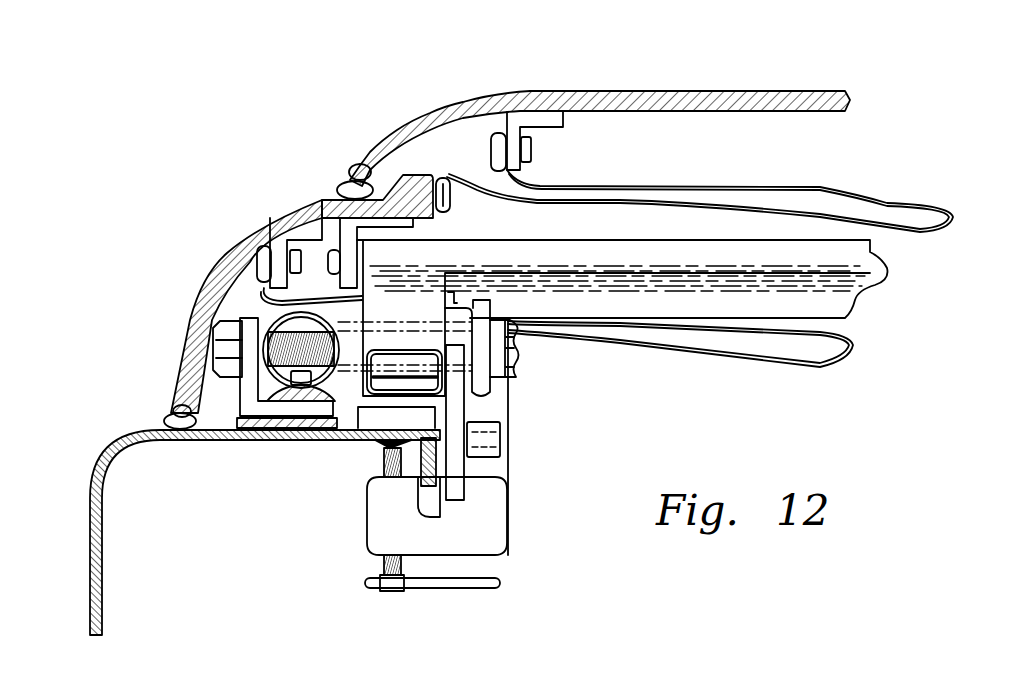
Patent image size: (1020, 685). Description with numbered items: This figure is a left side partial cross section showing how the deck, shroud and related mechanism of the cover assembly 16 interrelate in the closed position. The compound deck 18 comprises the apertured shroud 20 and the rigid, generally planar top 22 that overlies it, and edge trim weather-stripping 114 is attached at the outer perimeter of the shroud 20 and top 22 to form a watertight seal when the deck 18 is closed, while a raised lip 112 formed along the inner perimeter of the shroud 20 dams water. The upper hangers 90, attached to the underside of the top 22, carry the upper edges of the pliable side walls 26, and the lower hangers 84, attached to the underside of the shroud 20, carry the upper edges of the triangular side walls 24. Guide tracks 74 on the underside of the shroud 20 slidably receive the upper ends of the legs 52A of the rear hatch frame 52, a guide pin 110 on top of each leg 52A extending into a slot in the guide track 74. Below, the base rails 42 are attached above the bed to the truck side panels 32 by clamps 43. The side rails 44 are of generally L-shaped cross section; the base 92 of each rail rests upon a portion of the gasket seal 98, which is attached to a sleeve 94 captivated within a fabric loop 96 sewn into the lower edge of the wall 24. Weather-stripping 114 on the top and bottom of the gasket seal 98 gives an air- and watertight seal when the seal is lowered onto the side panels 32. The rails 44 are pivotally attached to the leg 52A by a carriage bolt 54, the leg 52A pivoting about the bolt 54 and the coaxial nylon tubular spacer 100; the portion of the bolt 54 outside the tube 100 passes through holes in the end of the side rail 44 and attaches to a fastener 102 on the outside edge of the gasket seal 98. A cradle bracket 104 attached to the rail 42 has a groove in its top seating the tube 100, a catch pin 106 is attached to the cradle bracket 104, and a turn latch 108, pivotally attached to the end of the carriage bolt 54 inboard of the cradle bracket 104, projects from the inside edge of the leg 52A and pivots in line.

The cover assembly 16 is at (352, 86).
The compound deck 18 is at (345, 140).
The shroud 20 is at (180, 365).
The top 22 is at (672, 90).
The side walls 24 is at (748, 358).
The side walls 26 is at (690, 175).
The side panels 32 is at (130, 440).
The base rails 42 is at (445, 497).
The clamps 43 is at (508, 545).
The side rails 44 is at (250, 300).
The rear hatch frame 52 is at (682, 250).
The legs 52A is at (413, 280).
The carriage bolt 54 is at (515, 357).
The guide tracks 74 is at (410, 224).
The lower hangers 84 is at (280, 243).
The upper hangers 90 is at (530, 120).
The base 92 is at (250, 400).
The sleeve 94 is at (238, 430).
The fabric loop 96 is at (336, 400).
The gasket seal 98 is at (300, 392).
The tubular spacer 100 is at (352, 350).
The fastener 102 is at (222, 325).
The cradle bracket 104 is at (475, 490).
The catch pin 106 is at (490, 457).
The turn latch 108 is at (488, 397).
The guide pin 110 is at (328, 250).
The raised lip 112 is at (420, 175).
The weather-stripping 114 is at (350, 182).